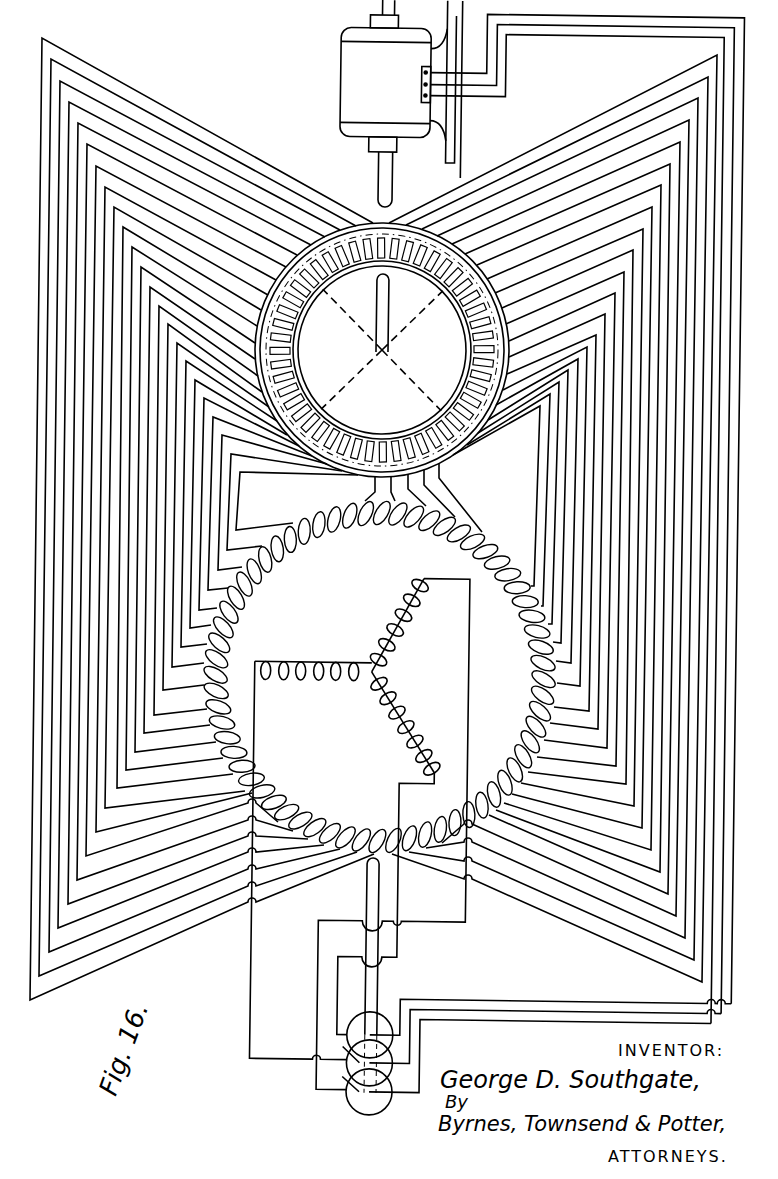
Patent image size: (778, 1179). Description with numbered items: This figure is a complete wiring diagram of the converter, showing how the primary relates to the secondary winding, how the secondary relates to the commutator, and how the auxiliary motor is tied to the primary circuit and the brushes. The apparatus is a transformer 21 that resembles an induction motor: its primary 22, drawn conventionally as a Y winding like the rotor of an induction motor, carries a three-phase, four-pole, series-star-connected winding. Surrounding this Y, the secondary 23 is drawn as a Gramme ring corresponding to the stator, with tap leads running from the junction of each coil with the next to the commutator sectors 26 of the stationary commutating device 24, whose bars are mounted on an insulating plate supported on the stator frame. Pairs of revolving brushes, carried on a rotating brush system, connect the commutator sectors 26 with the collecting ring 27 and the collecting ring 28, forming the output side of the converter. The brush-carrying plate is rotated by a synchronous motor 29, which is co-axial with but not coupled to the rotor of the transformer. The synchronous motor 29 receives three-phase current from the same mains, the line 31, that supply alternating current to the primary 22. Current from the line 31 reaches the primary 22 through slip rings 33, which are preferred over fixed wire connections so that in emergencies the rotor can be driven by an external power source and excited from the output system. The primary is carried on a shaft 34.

The armature winding 21 is at (378, 766).
The phase coil 22 is at (310, 846).
The phase coil 23 is at (387, 819).
The rotor pole arm 24 is at (345, 319).
The rotor pole arm 26 is at (424, 312).
The rotor 27 is at (322, 366).
The motor shaft 28 is at (378, 206).
The motor 29 is at (338, 64).
The lead conductors 31 is at (744, 1025).
The slip rings 33 is at (354, 1097).
The shaft 34 is at (384, 982).